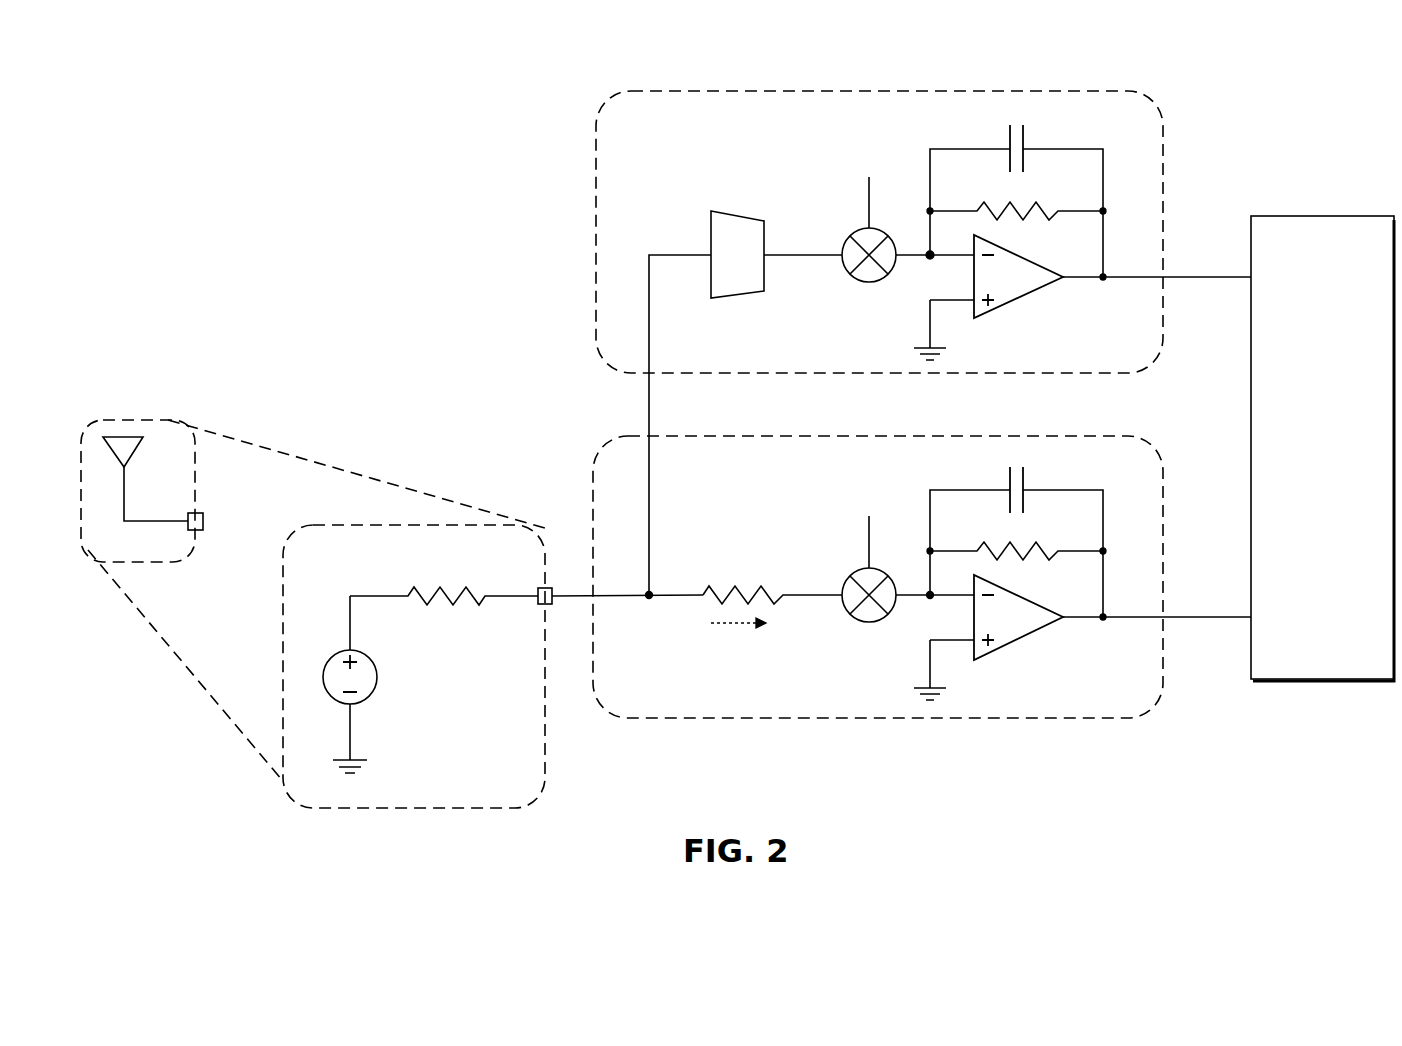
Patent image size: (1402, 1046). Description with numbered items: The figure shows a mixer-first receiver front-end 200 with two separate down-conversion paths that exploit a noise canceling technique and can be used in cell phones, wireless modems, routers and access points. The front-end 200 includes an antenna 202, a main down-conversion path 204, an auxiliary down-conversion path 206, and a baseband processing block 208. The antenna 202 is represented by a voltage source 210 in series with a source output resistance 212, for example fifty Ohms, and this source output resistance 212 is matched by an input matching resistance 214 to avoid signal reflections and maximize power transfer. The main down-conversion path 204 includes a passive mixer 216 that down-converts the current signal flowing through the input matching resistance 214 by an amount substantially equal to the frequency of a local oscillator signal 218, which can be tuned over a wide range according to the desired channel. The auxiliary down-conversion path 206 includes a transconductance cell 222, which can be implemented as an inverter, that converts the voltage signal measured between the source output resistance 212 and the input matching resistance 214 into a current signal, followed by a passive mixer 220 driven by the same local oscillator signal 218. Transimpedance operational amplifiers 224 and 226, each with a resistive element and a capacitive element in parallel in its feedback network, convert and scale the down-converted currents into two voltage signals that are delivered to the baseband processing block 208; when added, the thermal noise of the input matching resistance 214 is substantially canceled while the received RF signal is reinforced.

The mixer-first receiver front-end 200 is at (1108, 811).
The antenna 202 is at (135, 451).
The main down-conversion path 204 is at (595, 492).
The auxiliary down-conversion path 206 is at (595, 160).
The baseband processing block 208 is at (1322, 448).
The voltage source 210 is at (378, 678).
The source output resistance 212 is at (451, 570).
The input matching resistance 214 is at (772, 593).
The passive mixer 216 is at (850, 614).
The local oscillator signal 218 is at (869, 347).
The passive mixer 220 is at (850, 272).
The transconductance cell 222 is at (711, 228).
The transimpedance operational amplifier 224 is at (1015, 640).
The transimpedance operational amplifier 226 is at (1015, 300).